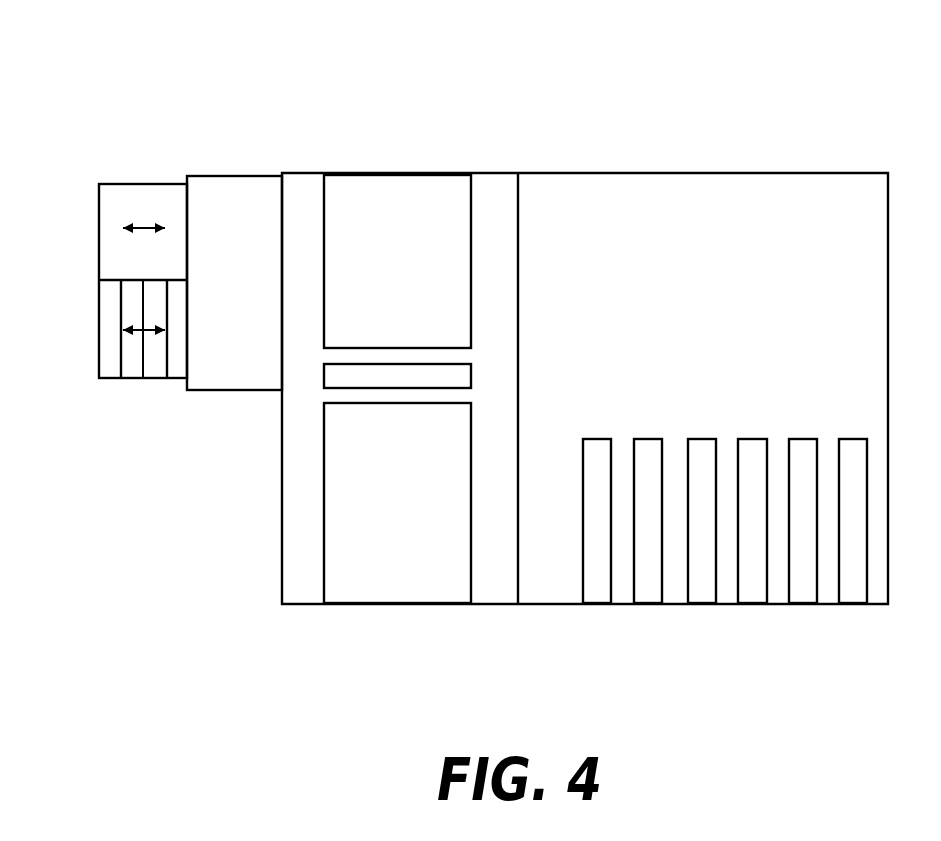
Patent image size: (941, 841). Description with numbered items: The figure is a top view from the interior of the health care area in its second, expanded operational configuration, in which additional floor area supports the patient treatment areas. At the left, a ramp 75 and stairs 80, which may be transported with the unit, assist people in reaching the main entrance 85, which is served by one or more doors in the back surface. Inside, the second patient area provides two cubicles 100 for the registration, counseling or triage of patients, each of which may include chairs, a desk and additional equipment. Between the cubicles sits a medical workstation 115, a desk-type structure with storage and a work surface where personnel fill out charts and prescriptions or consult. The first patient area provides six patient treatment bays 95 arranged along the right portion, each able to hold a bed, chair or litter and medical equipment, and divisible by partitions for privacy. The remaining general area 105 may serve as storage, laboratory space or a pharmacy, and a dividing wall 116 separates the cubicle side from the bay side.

The ramp 75 is at (140, 198).
The stairs 80 is at (155, 362).
The main entrance 85 is at (196, 148).
The patient treatment bays 95 is at (650, 520).
The cubicles 100 is at (380, 258).
The general area 105 is at (697, 288).
The medical workstations 115 is at (372, 376).
The divider wall 116 is at (518, 311).